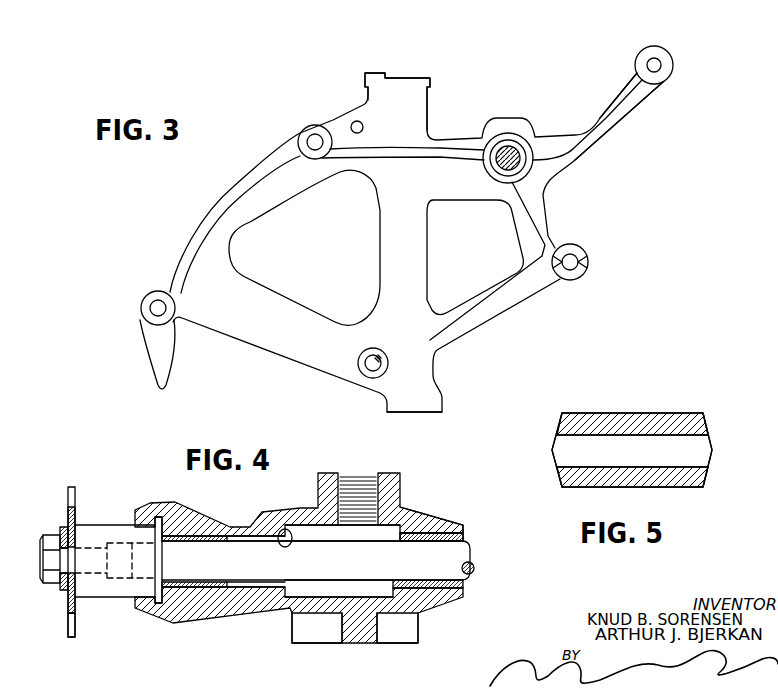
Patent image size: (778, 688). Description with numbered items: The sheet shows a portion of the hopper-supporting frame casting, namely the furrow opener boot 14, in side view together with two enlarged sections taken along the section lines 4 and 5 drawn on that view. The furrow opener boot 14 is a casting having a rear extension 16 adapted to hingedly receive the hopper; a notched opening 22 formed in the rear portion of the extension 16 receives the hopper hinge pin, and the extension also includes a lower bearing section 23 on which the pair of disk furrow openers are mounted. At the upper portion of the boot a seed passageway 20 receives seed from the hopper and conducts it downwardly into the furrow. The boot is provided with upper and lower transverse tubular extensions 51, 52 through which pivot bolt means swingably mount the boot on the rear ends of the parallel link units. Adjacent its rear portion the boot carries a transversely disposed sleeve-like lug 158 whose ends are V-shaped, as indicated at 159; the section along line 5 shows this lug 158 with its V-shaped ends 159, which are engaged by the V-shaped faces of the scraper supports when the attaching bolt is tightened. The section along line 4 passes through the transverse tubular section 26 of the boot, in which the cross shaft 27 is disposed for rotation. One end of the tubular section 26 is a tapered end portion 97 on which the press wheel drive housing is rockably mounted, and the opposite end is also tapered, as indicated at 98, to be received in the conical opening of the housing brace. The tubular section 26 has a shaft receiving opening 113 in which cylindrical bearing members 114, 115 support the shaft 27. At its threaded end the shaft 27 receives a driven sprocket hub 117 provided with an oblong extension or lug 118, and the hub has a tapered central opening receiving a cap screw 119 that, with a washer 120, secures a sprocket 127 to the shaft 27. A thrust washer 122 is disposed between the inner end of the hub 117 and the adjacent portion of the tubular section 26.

In FIG. 3, the furrow opener boot 14 is at (260, 153).
In FIG. 4, the furrow opener boot 14 is at (391, 650).
In FIG. 3, the rear extension 16 is at (650, 104).
In FIG. 3, the seed passageway 20 is at (397, 68).
In FIG. 3, the notched opening 22 is at (643, 65).
In FIG. 3, the lower bearing section 23 is at (364, 362).
In FIG. 3, the transverse tubular section 26 is at (523, 152).
In FIG. 4, the transverse tubular section 26 is at (255, 615).
In FIG. 3, the cross shaft 27 is at (497, 167).
In FIG. 4, the cross shaft 27 is at (473, 571).
In FIG. 3, the upper transverse tubular extension 51 is at (310, 128).
In FIG. 3, the lower transverse tubular extension 52 is at (155, 298).
In FIG. 3, the sleeve-like lug 158 is at (588, 253).
In FIG. 5, the sleeve-like lug 158 is at (620, 413).
In FIG. 5, the V-shaped ends 159 is at (552, 450).
In FIG. 4, the tapered end portion 97 is at (154, 503).
In FIG. 4, the tapered end 98 is at (437, 523).
In FIG. 4, the shaft receiving opening 113 is at (292, 527).
In FIG. 4, the cylindrical bearing member 114 is at (212, 543).
In FIG. 4, the cylindrical bearing member 115 is at (471, 549).
In FIG. 4, the driven sprocket hub 117 is at (97, 524).
In FIG. 4, the oblong extension or lug 118 is at (75, 566).
In FIG. 4, the cap screw 119 is at (51, 497).
In FIG. 4, the washer 120 is at (62, 592).
In FIG. 4, the thrust washer 122 is at (163, 556).
In FIG. 4, the sprocket 127 is at (76, 625).
In FIG. 3, the section line 4— 4 is at (508, 113).
In FIG. 3, the section line 5— 5 is at (582, 240).